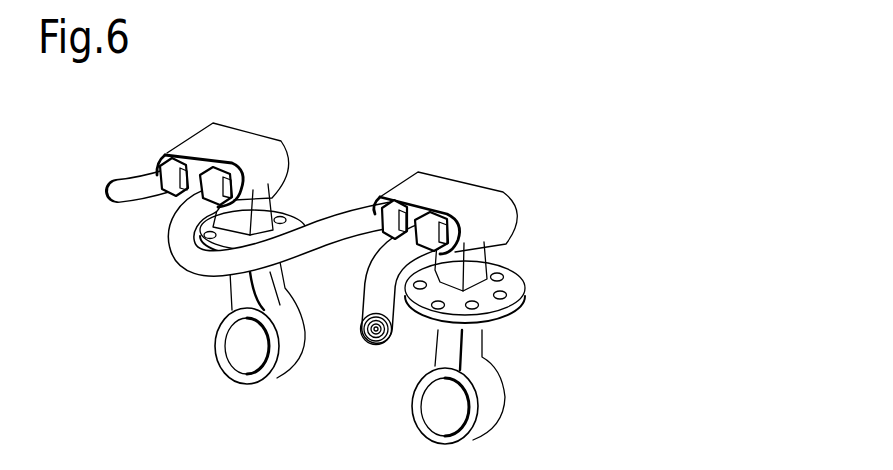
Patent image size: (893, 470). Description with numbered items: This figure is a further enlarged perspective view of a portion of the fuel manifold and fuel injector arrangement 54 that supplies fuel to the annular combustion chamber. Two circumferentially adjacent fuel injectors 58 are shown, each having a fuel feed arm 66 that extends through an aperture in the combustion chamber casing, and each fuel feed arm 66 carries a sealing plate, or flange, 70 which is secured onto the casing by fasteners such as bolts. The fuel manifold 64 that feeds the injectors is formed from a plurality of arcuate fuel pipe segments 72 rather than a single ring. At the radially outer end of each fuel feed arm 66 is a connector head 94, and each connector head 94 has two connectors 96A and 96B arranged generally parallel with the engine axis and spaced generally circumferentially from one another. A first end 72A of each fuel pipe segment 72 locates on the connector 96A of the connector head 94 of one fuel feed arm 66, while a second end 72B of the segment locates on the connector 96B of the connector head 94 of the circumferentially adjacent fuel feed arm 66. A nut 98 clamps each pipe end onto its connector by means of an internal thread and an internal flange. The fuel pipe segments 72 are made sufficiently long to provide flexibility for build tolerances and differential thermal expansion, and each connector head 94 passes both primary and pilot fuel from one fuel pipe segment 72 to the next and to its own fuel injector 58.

The fuel manifold and fuel injector arrangement 54 is at (590, 192).
The fuel injector 58 is at (285, 349).
The fuel manifold 64 is at (168, 248).
The fuel feed arm 66 is at (263, 198).
The sealing plate 70 is at (294, 222).
The fuel pipe segment 72 is at (277, 265).
The first end of fuel pipe segment 72A is at (160, 185).
The second end of fuel pipe segment 72B is at (172, 204).
The connector head 94 is at (238, 132).
The connector 96A is at (158, 162).
The connector 96B is at (228, 168).
The nut 98 is at (188, 165).